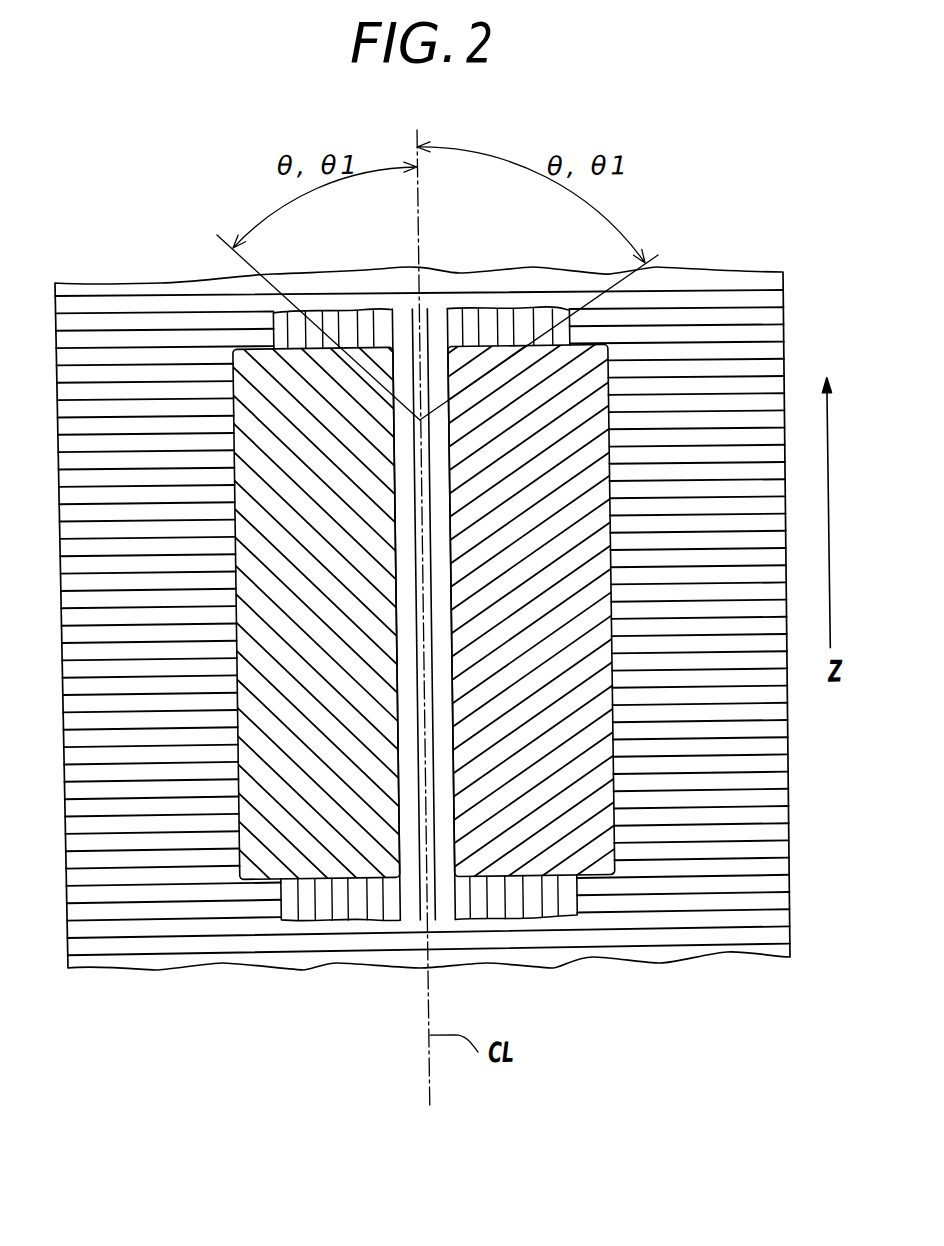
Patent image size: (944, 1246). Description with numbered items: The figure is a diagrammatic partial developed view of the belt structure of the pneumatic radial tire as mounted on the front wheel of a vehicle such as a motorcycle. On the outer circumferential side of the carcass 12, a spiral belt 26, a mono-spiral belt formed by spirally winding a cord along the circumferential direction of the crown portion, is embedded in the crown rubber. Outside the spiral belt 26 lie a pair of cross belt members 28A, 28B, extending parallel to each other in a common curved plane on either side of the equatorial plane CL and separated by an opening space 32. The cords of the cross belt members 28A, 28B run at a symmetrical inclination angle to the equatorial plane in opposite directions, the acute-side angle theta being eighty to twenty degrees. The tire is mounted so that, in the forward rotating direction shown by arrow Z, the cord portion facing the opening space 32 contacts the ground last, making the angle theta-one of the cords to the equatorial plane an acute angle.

The carcass 12 is at (111, 325).
The cross belt member 28A is at (244, 393).
The cross belt member 28B is at (595, 383).
The spiral belt 26 is at (330, 896).
The opening space 32 is at (434, 380).